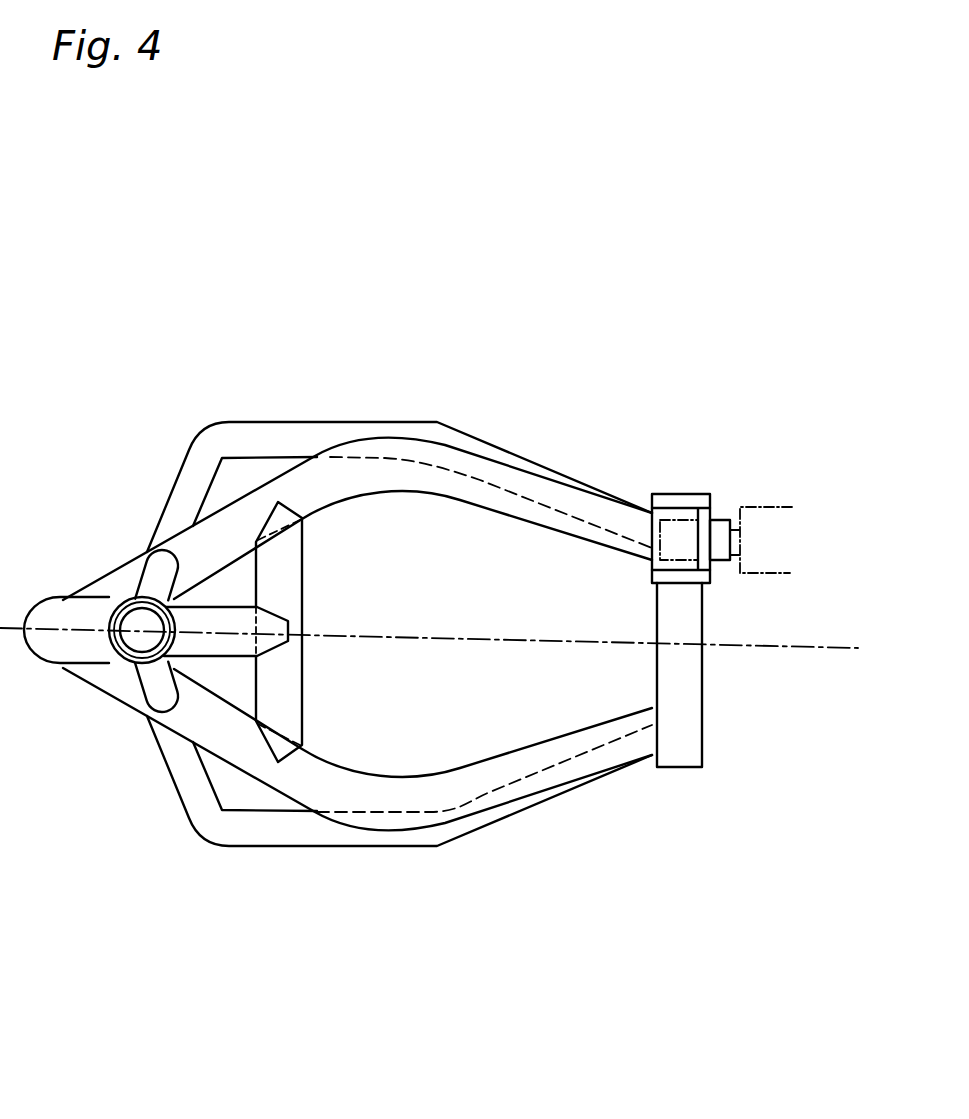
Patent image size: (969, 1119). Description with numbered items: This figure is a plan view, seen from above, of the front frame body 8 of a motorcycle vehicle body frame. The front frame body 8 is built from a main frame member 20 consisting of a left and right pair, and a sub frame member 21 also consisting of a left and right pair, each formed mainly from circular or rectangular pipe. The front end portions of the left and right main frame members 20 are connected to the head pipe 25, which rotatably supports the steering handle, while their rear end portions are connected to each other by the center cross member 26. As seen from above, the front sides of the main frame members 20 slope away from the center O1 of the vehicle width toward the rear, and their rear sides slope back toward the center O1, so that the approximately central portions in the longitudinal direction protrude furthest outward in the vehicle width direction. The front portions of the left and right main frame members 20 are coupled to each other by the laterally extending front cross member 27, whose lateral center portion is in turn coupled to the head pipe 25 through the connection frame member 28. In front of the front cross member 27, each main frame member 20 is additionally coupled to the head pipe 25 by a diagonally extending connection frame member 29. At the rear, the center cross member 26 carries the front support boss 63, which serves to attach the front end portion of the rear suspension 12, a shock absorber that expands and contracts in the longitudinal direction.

The front frame body 8 is at (560, 350).
The rear suspension 12 is at (775, 507).
The main frame member 20 is at (410, 900).
The sub frame member 21 is at (258, 900).
The head pipe 25 is at (87, 613).
The center cross member 26 is at (703, 692).
The front cross member 27 is at (300, 697).
The connection frame member 28 is at (202, 652).
The connection frame member 29 is at (133, 563).
The front support boss 63 is at (685, 500).
The center of vehicle width O1 is at (800, 646).